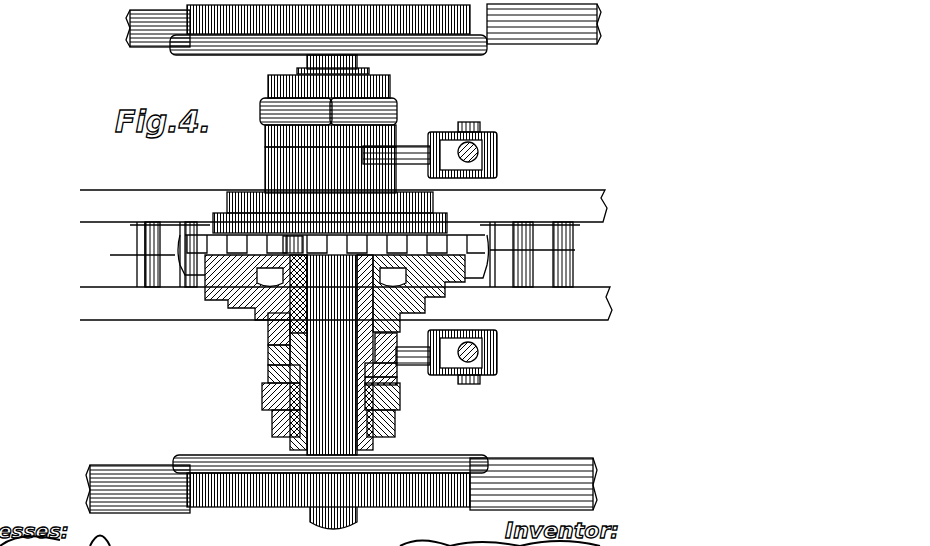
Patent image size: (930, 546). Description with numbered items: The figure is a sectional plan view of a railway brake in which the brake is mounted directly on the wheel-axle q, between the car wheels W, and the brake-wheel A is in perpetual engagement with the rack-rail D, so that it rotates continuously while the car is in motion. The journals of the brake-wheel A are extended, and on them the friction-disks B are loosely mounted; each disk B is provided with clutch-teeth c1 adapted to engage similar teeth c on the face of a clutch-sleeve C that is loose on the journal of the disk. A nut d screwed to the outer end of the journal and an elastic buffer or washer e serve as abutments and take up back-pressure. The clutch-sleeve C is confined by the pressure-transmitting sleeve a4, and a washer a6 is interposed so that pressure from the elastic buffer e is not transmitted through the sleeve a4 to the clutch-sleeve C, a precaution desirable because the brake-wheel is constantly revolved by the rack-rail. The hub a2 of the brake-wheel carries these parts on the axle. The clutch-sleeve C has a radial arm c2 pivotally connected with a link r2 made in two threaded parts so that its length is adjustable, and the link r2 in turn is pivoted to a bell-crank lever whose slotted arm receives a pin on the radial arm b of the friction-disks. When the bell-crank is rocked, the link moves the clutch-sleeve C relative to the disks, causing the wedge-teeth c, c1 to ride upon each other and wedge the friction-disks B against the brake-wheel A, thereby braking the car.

The wheel W is at (428, 50).
The nut d is at (388, 84).
The washer a6 is at (395, 112).
The elastic buffer or washer e is at (265, 113).
The pressure-transmitting sleeve a4 is at (268, 373).
The clutch-teeth c is at (268, 159).
The clutch-sleeve C is at (268, 355).
The radial arm b is at (285, 200).
The radial arm c2 is at (408, 150).
The link r2 is at (497, 155).
The friction-disk B is at (228, 201).
The brake-wheel A is at (213, 296).
The rack-rail D is at (351, 254).
The hub a2 is at (300, 288).
The clutch-teeth c1 is at (398, 335).
The wheel-axle q is at (331, 355).